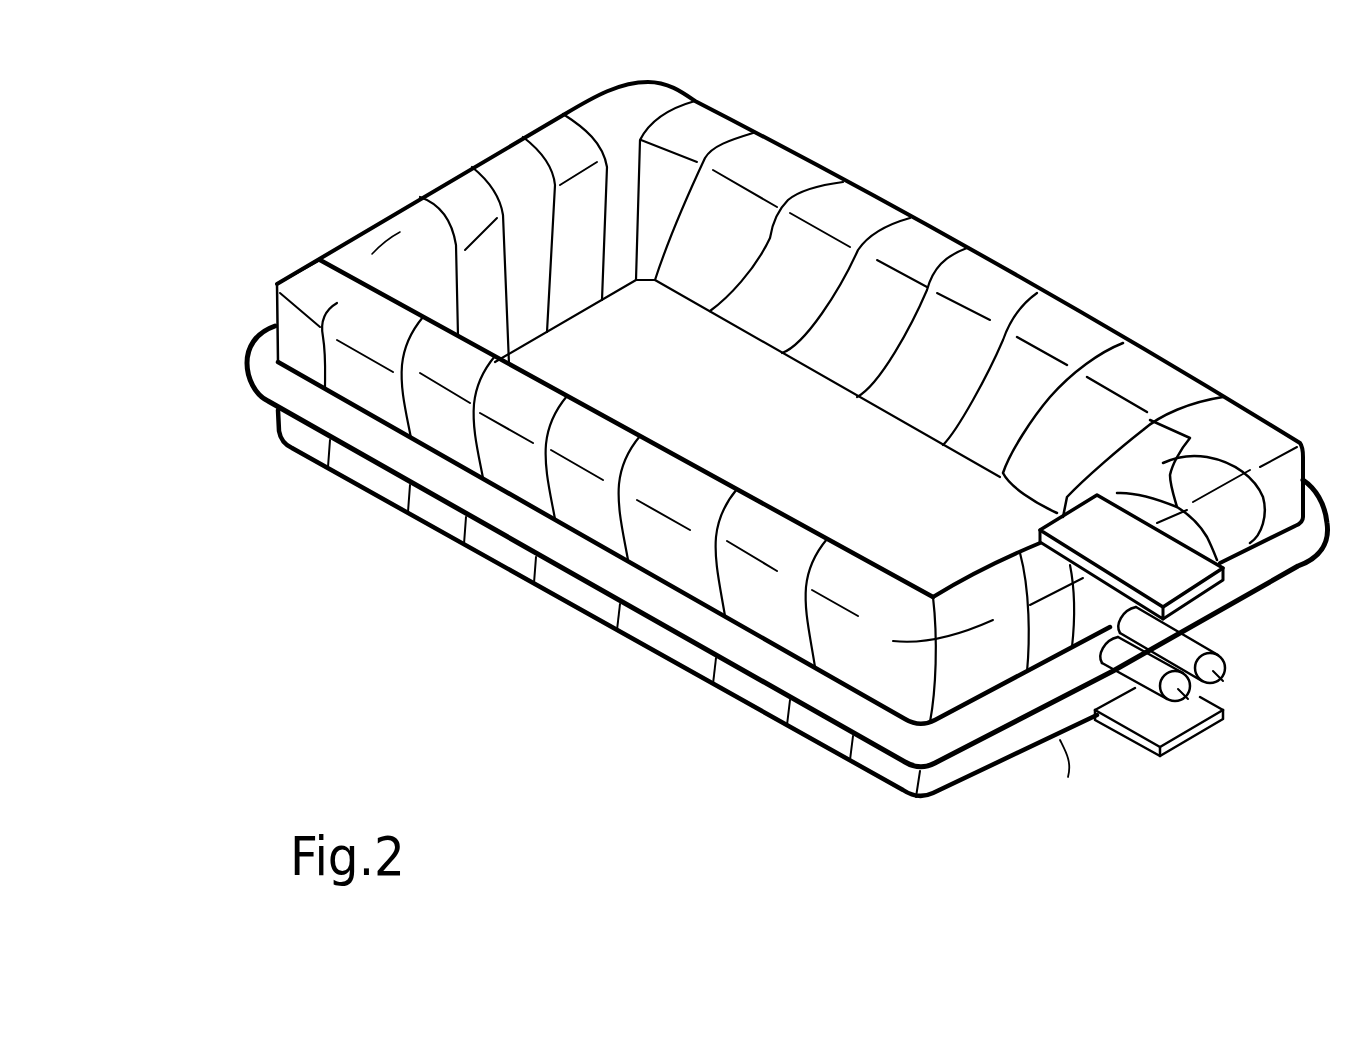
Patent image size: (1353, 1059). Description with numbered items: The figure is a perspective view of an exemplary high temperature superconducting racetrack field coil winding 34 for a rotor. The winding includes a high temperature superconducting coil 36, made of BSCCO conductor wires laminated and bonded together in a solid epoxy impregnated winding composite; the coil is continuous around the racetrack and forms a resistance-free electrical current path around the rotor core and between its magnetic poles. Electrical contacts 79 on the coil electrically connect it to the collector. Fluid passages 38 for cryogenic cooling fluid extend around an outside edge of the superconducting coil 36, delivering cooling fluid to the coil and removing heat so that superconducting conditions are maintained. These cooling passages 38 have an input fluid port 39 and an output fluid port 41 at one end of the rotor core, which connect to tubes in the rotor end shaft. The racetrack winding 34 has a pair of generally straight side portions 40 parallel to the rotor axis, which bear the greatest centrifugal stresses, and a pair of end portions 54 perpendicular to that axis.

The racetrack field coil winding 34 is at (435, 109).
The super-conducting coil 36 is at (1047, 332).
The fluid passages 38 is at (590, 567).
The input fluid port 39 is at (1188, 695).
The side portions 40 is at (443, 536).
The output fluid port 41 is at (1225, 680).
The end portions 54 is at (373, 252).
The electrical contacts 79 is at (1226, 578).